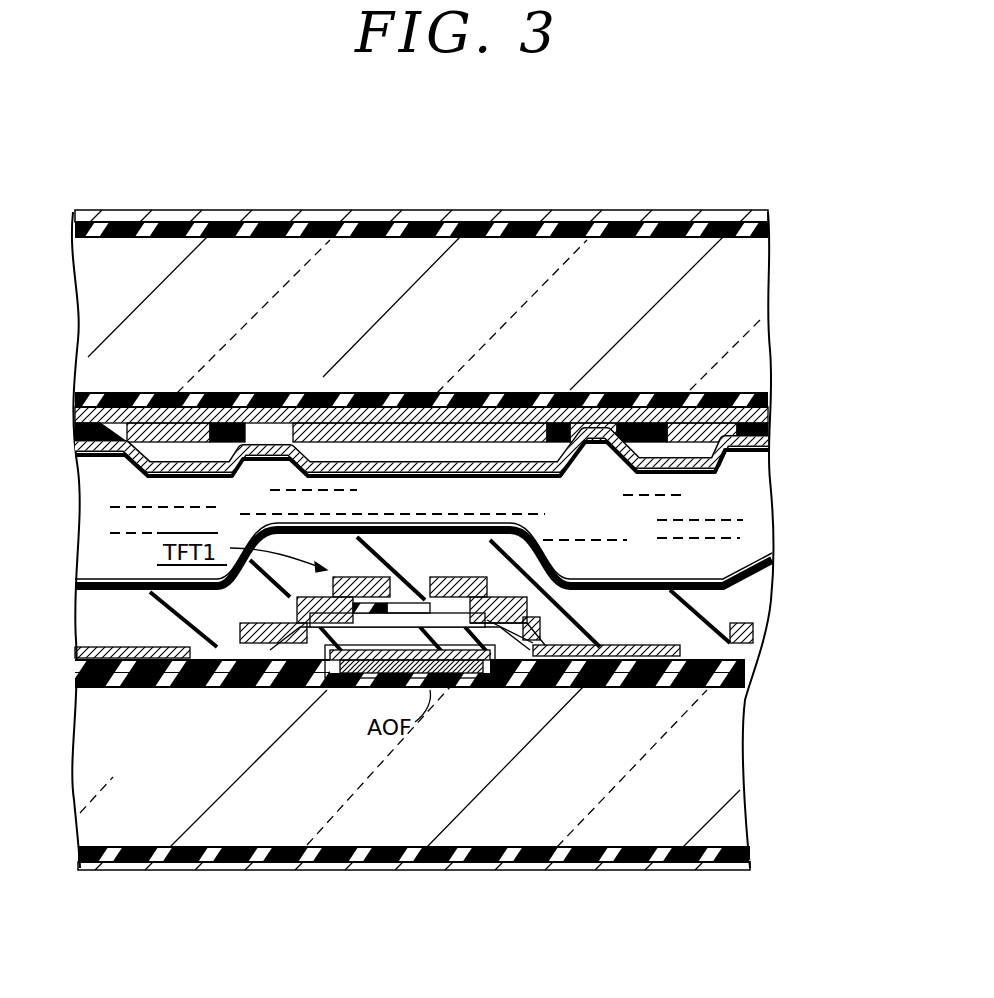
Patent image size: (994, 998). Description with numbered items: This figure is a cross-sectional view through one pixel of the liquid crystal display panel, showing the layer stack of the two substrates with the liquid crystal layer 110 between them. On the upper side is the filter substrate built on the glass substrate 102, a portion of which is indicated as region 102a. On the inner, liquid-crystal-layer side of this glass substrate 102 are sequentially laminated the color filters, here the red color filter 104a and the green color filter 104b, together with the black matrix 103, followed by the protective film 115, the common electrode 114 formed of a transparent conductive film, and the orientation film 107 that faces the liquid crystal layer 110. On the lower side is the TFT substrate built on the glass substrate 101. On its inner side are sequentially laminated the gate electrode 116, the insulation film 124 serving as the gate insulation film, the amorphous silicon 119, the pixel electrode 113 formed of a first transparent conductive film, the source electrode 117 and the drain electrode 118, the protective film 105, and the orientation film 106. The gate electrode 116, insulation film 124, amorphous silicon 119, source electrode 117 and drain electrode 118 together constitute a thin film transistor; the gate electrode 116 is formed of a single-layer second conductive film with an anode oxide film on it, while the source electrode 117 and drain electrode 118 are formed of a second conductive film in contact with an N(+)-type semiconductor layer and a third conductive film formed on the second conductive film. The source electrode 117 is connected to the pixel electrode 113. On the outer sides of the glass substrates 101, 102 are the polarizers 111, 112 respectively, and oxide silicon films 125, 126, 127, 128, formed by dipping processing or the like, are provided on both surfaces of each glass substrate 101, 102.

The glass substrate 101 is at (720, 773).
The glass substrate 102 is at (737, 303).
The substrate region 102a is at (187, 522).
The black matrix 103 is at (315, 425).
The color filter 104a is at (125, 425).
The color filter 104b is at (575, 430).
The protective film 105 is at (757, 603).
The orientation film 106 is at (747, 560).
The orientation film 107 is at (593, 482).
The liquid crystal layer 110 is at (747, 500).
The polarizer 111 is at (710, 868).
The polarizer 112 is at (740, 212).
The pixel electrode 113 is at (607, 660).
The common electrode 114 is at (397, 440).
The protective film 115 is at (760, 430).
The gate electrode 116 is at (360, 675).
The source electrode 117 is at (552, 790).
The drain electrode 118 is at (415, 568).
The amorphous silicon 119 is at (433, 690).
The insulation film 124 is at (733, 663).
The oxide silicon film 125 is at (755, 237).
The oxide silicon film 126 is at (740, 390).
The oxide silicon film 127 is at (727, 690).
The oxide silicon film 128 is at (737, 840).